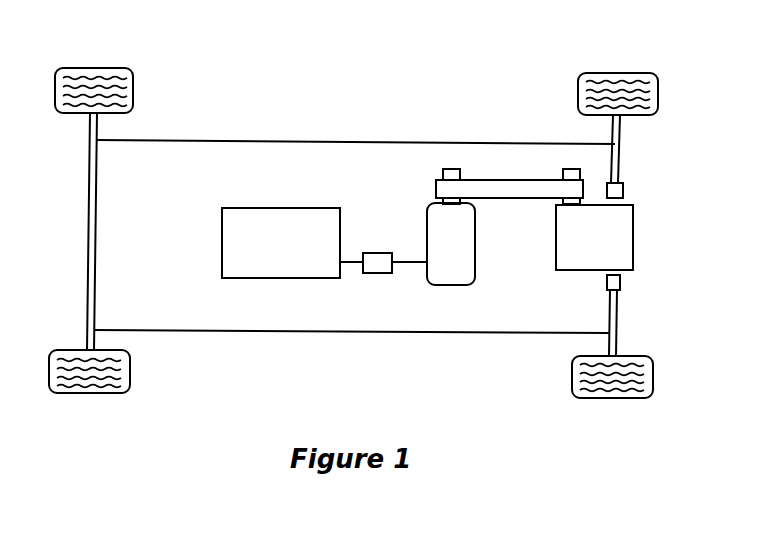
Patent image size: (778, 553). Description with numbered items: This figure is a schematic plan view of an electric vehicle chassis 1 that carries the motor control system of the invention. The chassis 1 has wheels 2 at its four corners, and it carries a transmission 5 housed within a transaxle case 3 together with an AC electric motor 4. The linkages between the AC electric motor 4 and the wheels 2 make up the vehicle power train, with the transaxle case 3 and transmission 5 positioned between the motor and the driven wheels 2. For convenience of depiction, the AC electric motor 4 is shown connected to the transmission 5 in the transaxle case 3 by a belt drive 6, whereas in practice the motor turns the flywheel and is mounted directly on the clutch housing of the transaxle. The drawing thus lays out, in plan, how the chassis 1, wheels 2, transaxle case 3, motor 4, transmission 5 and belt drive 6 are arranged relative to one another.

The electrical vehicle chassis 1 is at (273, 140).
The wheels 2 is at (578, 92).
The transaxle case 3 is at (614, 256).
The AC electric motor 4 is at (458, 272).
The transmission 5 is at (617, 225).
The belt drive 6 is at (488, 190).